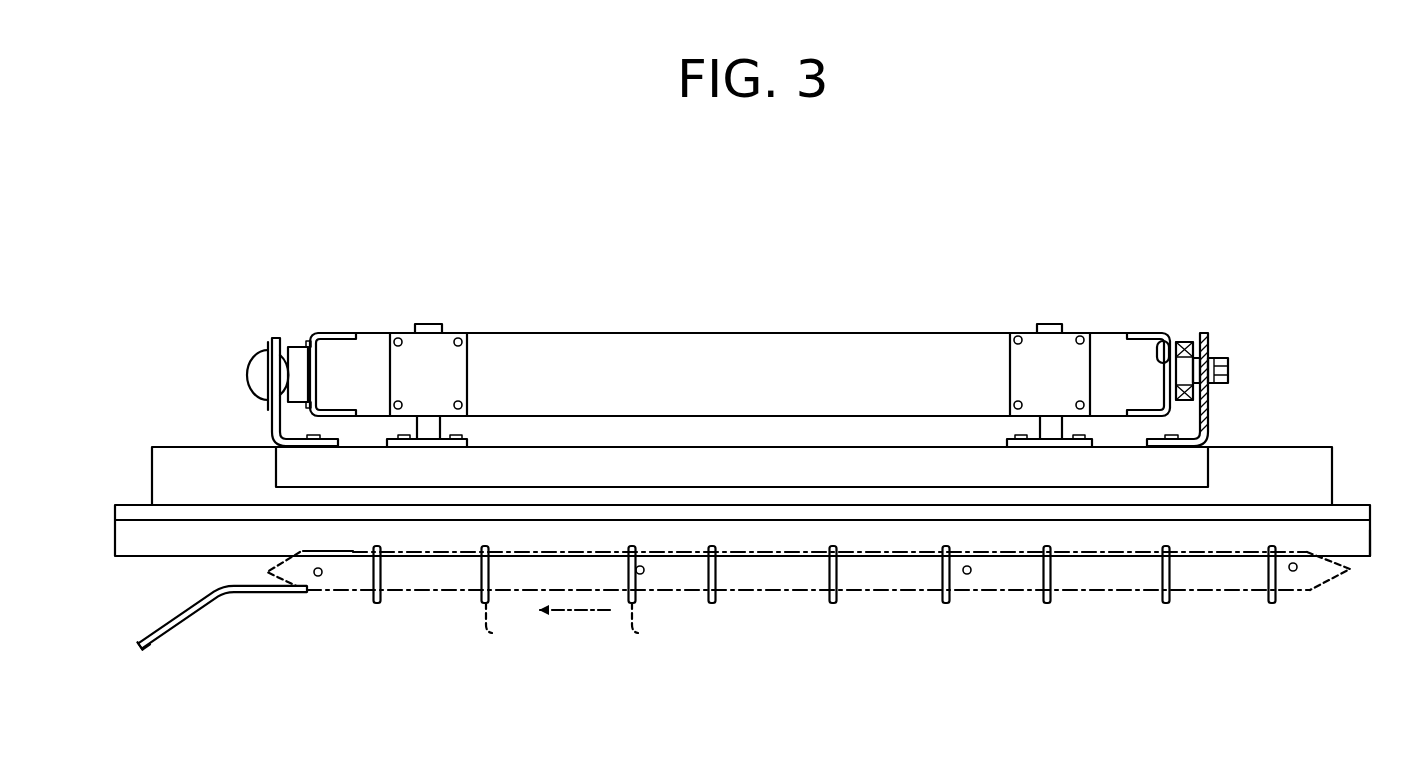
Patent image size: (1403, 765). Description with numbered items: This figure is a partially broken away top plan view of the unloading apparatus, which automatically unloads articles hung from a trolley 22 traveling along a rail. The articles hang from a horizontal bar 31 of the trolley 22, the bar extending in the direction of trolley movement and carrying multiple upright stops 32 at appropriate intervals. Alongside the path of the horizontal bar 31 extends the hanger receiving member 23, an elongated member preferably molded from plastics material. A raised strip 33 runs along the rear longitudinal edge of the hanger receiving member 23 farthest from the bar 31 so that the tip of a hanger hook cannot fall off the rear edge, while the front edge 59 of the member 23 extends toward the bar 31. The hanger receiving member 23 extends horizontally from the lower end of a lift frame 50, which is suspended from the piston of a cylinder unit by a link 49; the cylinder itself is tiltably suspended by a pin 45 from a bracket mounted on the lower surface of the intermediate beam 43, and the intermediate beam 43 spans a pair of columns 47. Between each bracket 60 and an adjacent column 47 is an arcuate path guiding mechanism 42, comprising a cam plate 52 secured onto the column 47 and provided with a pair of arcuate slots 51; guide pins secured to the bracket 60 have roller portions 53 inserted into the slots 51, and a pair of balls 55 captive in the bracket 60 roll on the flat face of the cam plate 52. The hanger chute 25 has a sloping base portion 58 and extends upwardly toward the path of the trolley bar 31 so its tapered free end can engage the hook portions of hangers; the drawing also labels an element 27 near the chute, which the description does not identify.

The trolley 22 is at (753, 600).
The hanger receiving member 23 is at (1343, 500).
The hanger chute 25 is at (214, 608).
The guide tube outlet 27 is at (305, 594).
The horizontal bar 31 is at (874, 600).
The upright stops 32 is at (645, 574).
The raised strip 33 is at (128, 512).
The arcuate path guiding mechanism 42 is at (253, 343).
The intermediate beam 43 is at (754, 333).
The pin 45 is at (1230, 373).
The columns 47 is at (344, 333).
The link 49 is at (442, 425).
The lift frame 50 is at (662, 447).
The arcuate slots 51 is at (1163, 337).
The cam plate 52 is at (296, 340).
The roller portions 53 is at (1207, 383).
The balls 55 is at (286, 373).
The sloping base portion 58 is at (149, 634).
The edge 59 is at (1362, 558).
The bracket 60 is at (272, 432).